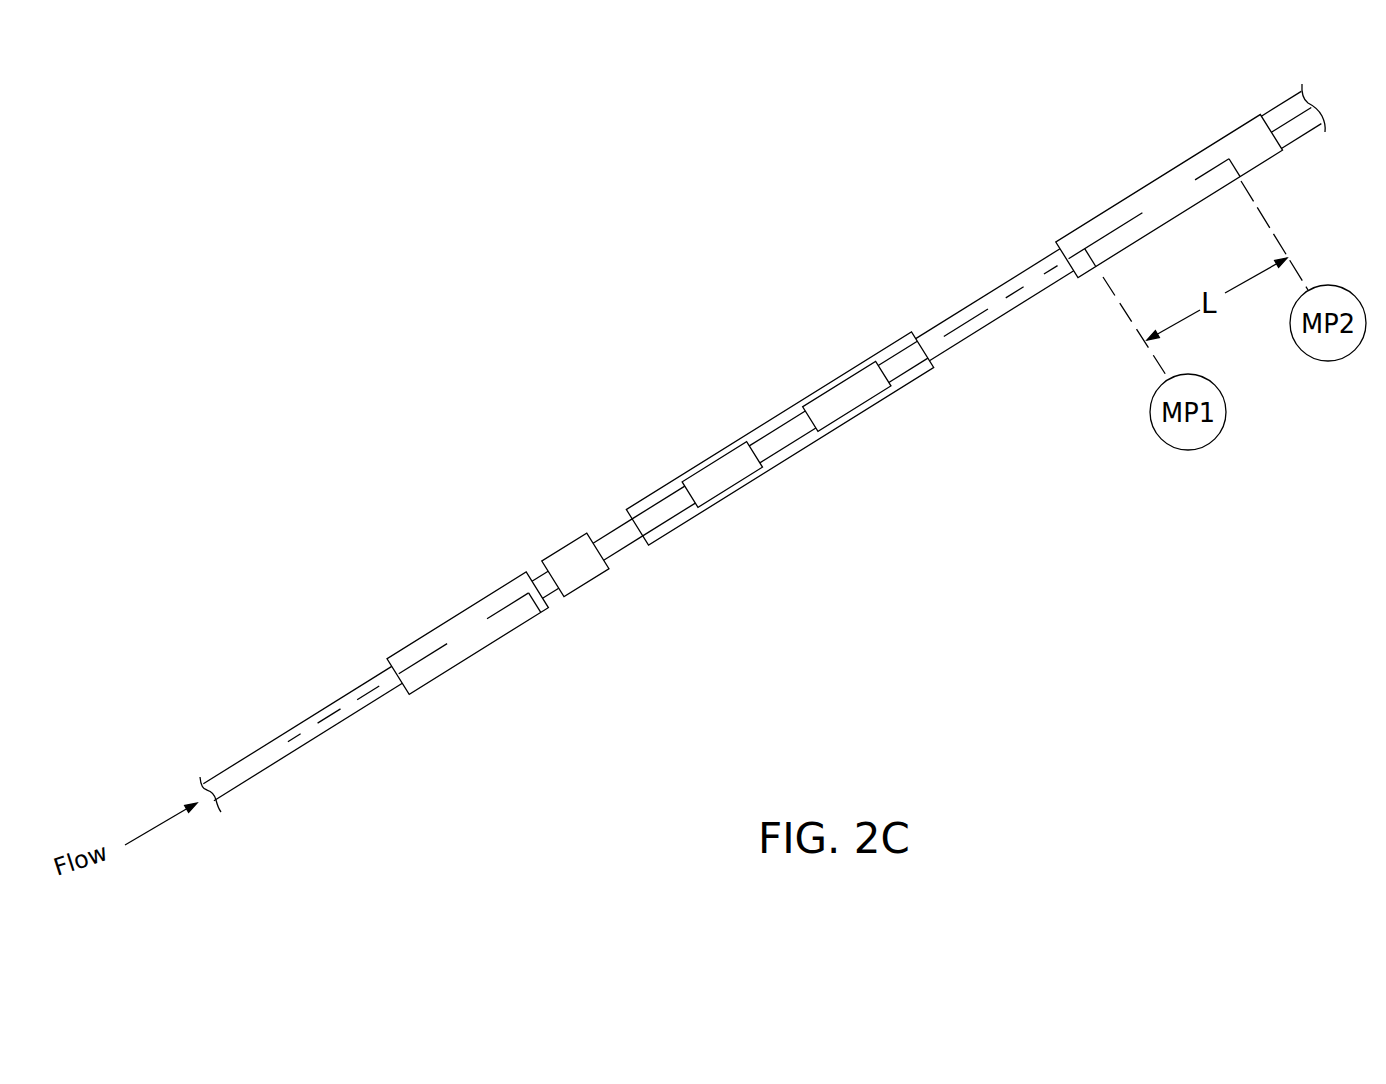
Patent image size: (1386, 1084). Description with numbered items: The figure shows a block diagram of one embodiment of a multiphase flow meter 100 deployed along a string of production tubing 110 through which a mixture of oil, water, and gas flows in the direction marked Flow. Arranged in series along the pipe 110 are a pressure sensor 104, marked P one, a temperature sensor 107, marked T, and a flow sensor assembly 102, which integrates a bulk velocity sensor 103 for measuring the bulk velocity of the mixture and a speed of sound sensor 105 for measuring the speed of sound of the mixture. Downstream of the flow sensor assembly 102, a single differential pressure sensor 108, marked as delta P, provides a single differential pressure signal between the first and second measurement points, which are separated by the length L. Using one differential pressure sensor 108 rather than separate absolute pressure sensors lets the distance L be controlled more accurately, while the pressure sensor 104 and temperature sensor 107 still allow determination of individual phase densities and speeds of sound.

The multiphase flow meter 100 is at (645, 284).
The flow sensor assembly 102 is at (799, 453).
The bulk velocity sensor 103 is at (718, 454).
The pressure sensor 104 is at (538, 620).
The speed of sound sensor 105 is at (845, 376).
The temperature sensor 107 is at (600, 580).
The differential pressure sensor 108 is at (1180, 164).
The production tubing 110 is at (1003, 285).